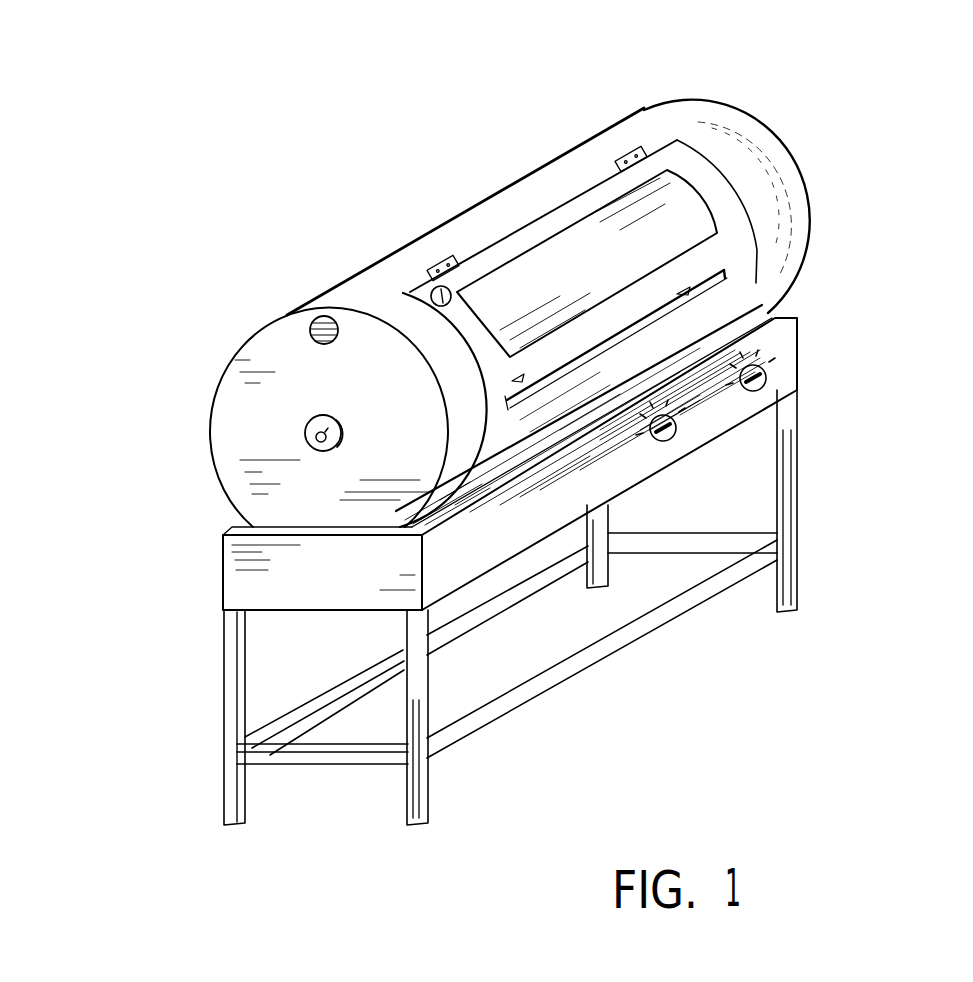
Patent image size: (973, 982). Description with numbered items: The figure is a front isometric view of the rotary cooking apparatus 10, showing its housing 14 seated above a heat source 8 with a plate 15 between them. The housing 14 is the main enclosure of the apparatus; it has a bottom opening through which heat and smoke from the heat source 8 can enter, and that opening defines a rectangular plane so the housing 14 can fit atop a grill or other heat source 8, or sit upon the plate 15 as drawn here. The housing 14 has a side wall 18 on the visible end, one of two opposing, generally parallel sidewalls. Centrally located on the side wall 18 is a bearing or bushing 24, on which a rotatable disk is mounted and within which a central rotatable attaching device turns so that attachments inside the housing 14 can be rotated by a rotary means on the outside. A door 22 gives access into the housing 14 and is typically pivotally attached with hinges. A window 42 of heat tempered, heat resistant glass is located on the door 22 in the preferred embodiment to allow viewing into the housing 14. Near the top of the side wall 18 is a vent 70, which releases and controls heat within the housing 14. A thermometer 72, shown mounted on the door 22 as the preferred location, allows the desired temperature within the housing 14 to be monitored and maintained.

The rotary cooking apparatus 10 is at (498, 424).
The heat source 8 is at (800, 343).
The plate 15 is at (770, 317).
The housing 14 is at (623, 135).
The side wall 18 is at (253, 453).
The door 22 is at (590, 199).
The bearing or bushing 24 is at (305, 429).
The window 42 is at (508, 294).
The vent 70 is at (310, 337).
The thermometer 72 is at (430, 296).